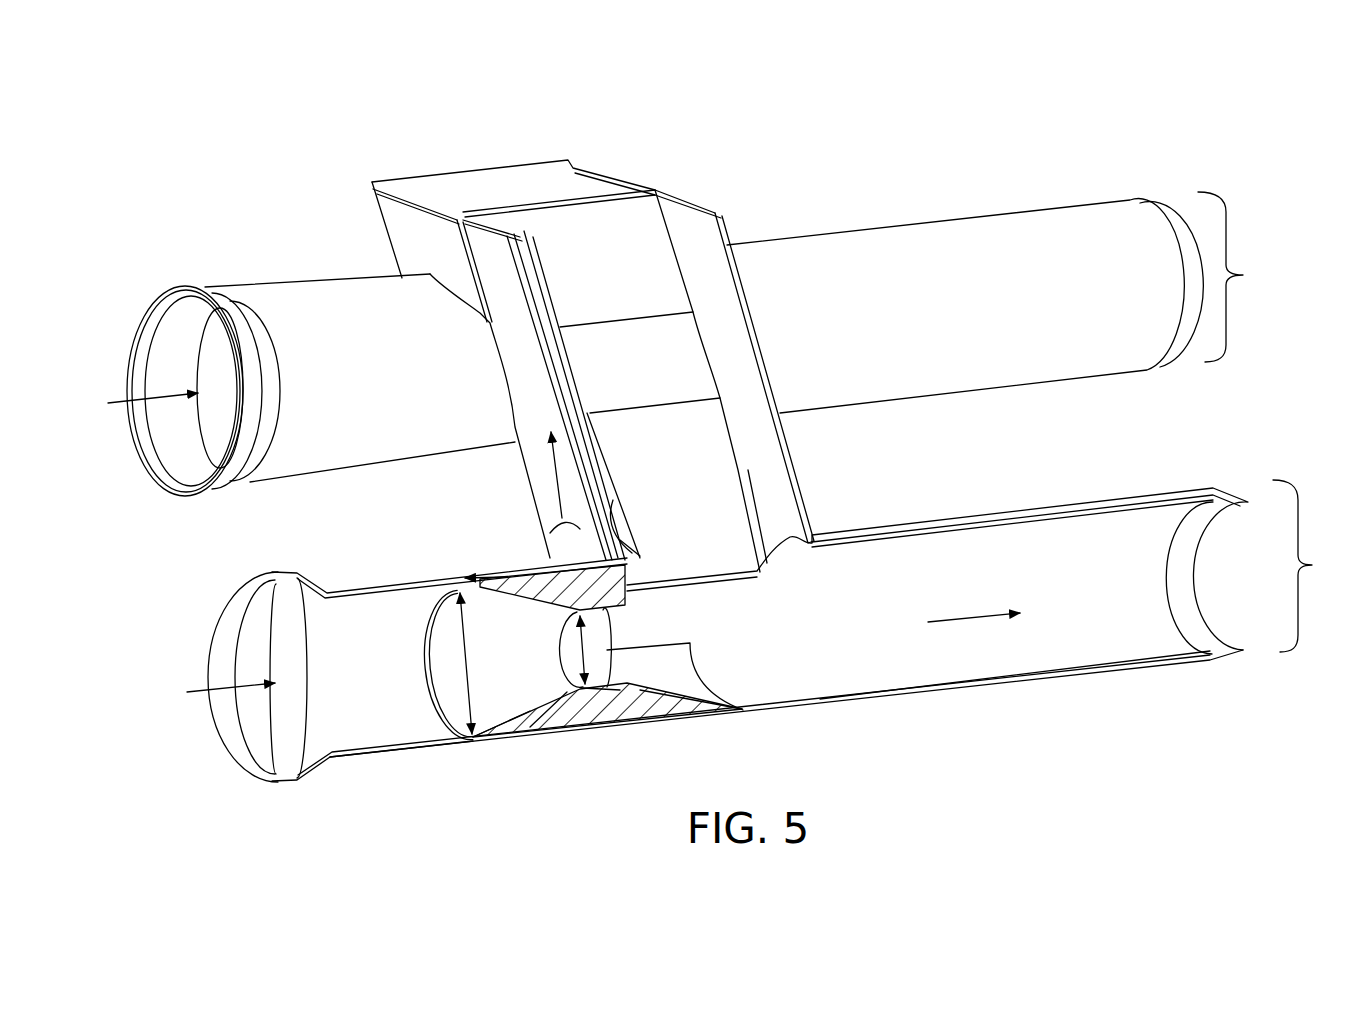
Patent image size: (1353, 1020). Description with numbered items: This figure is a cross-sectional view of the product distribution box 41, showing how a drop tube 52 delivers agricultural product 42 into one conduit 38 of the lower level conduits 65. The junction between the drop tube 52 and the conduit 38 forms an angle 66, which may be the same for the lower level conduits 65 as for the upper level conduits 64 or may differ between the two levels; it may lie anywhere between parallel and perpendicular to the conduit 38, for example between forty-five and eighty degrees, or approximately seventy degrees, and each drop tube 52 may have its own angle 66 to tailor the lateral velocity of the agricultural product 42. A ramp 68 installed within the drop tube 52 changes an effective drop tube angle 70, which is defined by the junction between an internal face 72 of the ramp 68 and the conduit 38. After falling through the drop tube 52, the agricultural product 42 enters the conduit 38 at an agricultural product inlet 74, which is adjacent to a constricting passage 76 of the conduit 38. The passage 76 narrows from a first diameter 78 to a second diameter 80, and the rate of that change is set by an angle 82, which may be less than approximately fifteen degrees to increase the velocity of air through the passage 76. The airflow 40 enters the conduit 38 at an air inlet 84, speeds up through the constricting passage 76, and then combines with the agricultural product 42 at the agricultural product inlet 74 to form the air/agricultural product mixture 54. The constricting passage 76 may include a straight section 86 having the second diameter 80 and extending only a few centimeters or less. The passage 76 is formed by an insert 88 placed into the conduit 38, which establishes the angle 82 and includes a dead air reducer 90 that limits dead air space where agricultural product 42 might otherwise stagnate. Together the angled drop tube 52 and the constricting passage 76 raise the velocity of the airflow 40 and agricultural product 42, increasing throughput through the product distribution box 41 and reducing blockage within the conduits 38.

The conduit 38 is at (933, 208).
The airflow 40 is at (120, 404).
The product distribution box 41 is at (278, 140).
The agricultural product 42 is at (600, 222).
The drop tube 52 is at (639, 266).
The air/agricultural product mixture 54 is at (972, 617).
The upper level conduits 64 is at (1238, 277).
The lower level conduits 65 is at (1312, 566).
The angle 66 is at (567, 560).
The ramp 68 is at (625, 533).
The effective drop tube angle 70 is at (613, 517).
The internal face 72 is at (605, 457).
The agricultural product inlet 74 is at (790, 660).
The constricting passage 76 is at (579, 749).
The first diameter 78 is at (457, 668).
The second diameter 80 is at (566, 650).
The angle 82 is at (530, 730).
The air inlet 84 is at (341, 724).
The straight section 86 is at (613, 727).
The insert 88 is at (567, 708).
The dead air reducer 90 is at (676, 706).